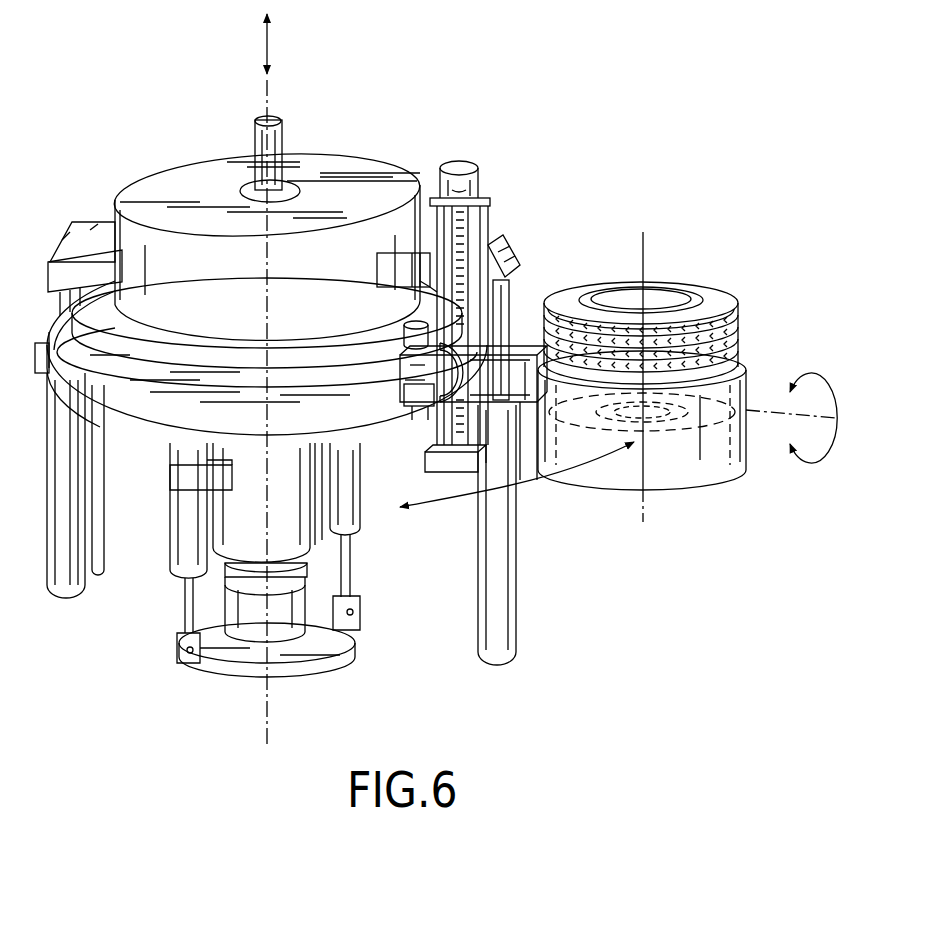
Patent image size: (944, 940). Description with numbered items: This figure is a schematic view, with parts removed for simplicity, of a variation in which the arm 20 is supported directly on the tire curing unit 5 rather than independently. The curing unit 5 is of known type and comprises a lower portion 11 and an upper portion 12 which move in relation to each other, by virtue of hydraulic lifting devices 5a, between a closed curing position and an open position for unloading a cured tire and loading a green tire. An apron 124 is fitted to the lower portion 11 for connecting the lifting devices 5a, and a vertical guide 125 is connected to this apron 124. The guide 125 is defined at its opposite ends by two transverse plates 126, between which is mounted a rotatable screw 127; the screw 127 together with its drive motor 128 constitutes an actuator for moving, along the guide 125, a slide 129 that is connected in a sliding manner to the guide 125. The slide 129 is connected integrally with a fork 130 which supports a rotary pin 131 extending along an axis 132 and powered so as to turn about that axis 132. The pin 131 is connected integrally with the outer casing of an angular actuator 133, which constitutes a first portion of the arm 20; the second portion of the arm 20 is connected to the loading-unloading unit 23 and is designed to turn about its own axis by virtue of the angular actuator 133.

The curing unit 5 is at (386, 152).
The hydraulic lifting devices 5a is at (86, 594).
The lower portion 11 is at (338, 150).
The upper portion 12 is at (152, 446).
The arm 20 is at (500, 394).
The loading-unloading unit 23 is at (752, 350).
The apron 124 is at (516, 412).
The vertical guide 125 is at (493, 228).
The transverse plates 126 is at (484, 205).
The rotatable screw 127 is at (472, 262).
The drive motor 128 is at (458, 161).
The slide 129 is at (492, 340).
The fork 130 is at (413, 412).
The rotary pin 131 is at (418, 346).
The axis 132 is at (440, 474).
The angular actuator 133 is at (427, 390).